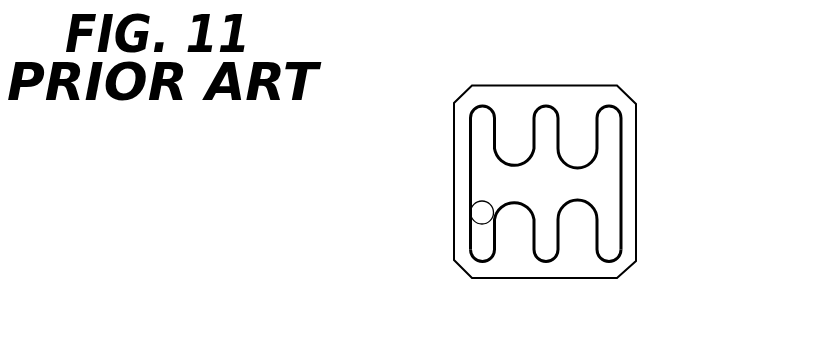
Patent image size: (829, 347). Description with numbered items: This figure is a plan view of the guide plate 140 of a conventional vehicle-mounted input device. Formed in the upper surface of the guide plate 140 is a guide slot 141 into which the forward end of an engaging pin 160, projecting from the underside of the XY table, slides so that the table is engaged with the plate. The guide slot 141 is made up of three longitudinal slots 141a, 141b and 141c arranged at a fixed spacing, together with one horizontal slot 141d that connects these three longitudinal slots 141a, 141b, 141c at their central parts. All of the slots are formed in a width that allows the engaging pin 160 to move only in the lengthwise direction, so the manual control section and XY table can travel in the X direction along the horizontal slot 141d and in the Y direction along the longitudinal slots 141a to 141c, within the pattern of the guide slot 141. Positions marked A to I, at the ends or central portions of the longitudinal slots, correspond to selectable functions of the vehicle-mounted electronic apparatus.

The guide plate 140 is at (637, 122).
The guide slot 141 is at (542, 182).
The longitudinal slot 141a is at (471, 135).
The longitudinal slot 141b is at (532, 127).
The longitudinal slot 141c is at (622, 162).
The horizontal slot 141d is at (575, 199).
The engaging pin 160 is at (478, 212).